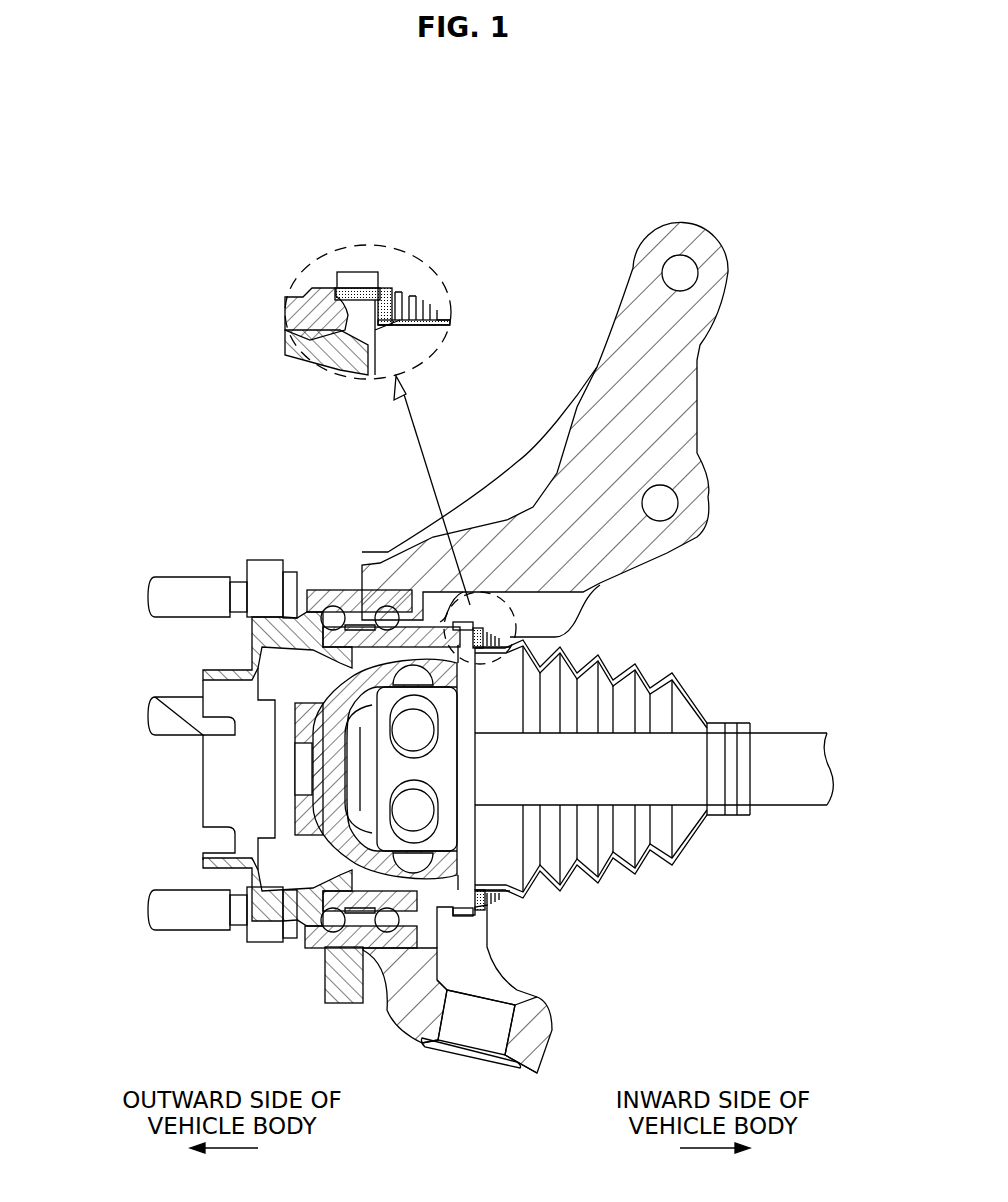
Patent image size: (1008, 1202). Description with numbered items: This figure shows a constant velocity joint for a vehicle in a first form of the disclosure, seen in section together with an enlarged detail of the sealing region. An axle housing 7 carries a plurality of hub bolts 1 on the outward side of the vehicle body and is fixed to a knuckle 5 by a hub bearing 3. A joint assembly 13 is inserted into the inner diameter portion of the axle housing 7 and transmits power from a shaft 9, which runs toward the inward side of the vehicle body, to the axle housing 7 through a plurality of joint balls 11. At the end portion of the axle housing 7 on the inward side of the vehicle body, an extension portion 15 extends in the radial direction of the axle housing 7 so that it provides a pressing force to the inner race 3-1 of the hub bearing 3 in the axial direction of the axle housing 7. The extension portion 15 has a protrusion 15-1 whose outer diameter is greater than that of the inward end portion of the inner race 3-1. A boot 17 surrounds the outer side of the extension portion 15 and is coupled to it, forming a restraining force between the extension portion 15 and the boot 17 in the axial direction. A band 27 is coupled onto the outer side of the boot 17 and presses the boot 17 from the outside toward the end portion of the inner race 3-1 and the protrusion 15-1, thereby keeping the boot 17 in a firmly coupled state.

The hub bolt 1 is at (175, 583).
The hub bearing 3 is at (369, 706).
The inner race 3-1 is at (407, 590).
The knuckle 5 is at (683, 420).
The axle housing 7 is at (250, 634).
The shaft 9 is at (782, 748).
The joint balls 11 is at (413, 812).
The joint assembly 13 is at (460, 793).
The extension portion 15 is at (383, 333).
The protrusion 15-1 is at (377, 293).
The boot 17 is at (413, 295).
The band 27 is at (360, 278).